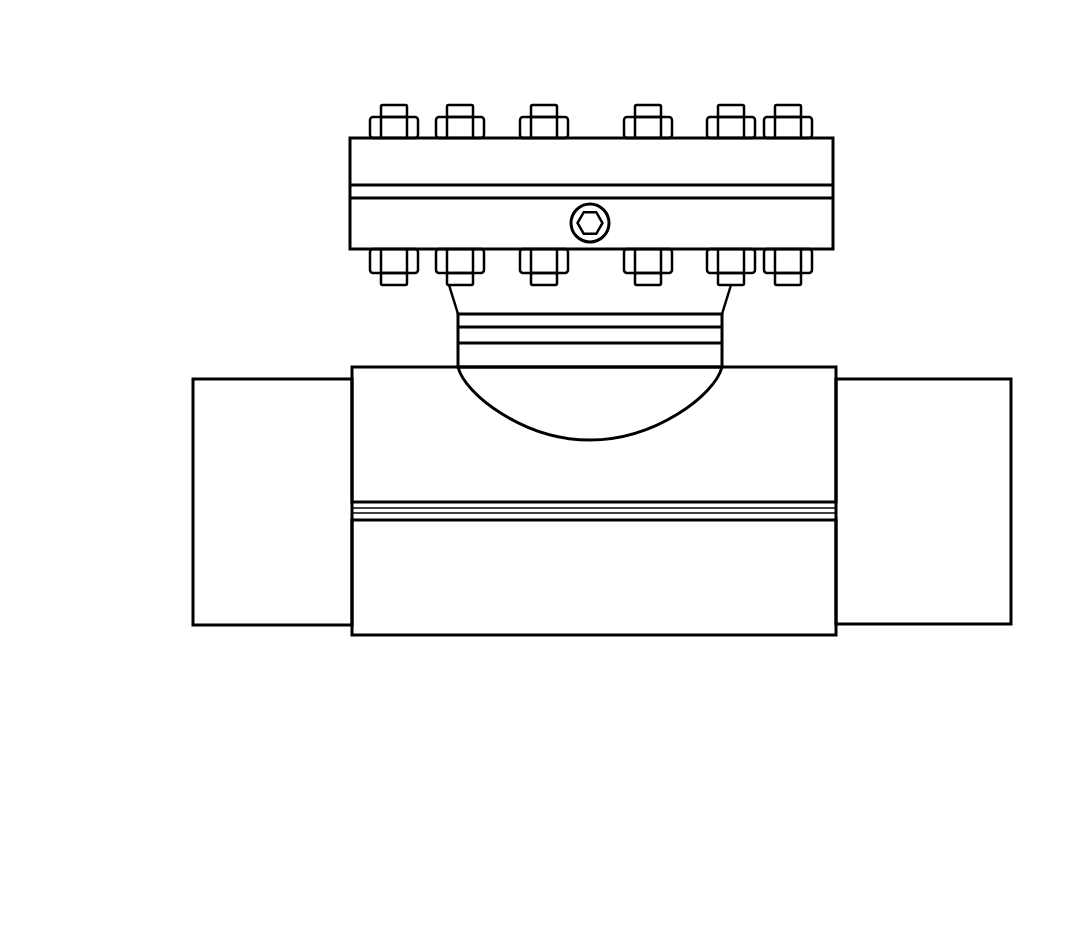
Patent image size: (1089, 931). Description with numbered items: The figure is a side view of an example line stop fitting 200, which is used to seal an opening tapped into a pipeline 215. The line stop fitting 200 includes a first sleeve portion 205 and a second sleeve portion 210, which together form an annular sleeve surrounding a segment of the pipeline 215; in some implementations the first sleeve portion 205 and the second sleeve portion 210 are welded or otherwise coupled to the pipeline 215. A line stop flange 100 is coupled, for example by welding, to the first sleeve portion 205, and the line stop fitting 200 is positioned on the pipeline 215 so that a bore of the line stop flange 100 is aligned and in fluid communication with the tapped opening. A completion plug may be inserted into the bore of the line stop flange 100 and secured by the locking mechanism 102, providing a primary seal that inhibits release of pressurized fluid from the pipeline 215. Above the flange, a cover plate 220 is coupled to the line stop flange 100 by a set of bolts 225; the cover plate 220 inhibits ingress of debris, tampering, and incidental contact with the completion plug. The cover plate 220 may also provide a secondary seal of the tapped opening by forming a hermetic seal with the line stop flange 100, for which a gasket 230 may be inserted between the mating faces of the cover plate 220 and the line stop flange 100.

The line stop fitting 200 is at (246, 99).
The line stop flange 100 is at (838, 212).
The cover plate 220 is at (592, 137).
The bolts 225 is at (394, 105).
The gasket 230 is at (350, 188).
The locking mechanism 102 is at (570, 223).
The first sleeve portion 205 is at (370, 365).
The second sleeve portion 210 is at (737, 636).
The pipeline 215 is at (962, 379).